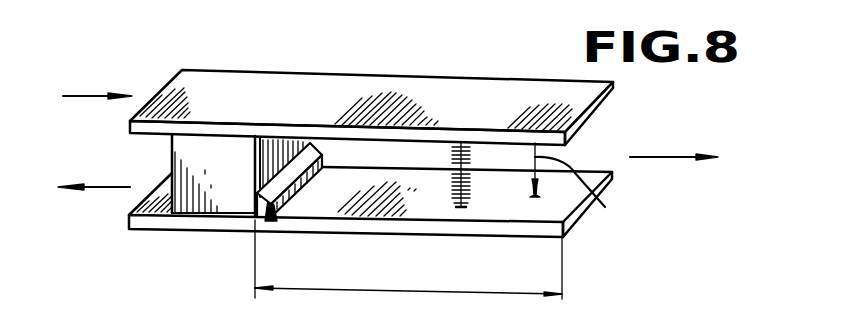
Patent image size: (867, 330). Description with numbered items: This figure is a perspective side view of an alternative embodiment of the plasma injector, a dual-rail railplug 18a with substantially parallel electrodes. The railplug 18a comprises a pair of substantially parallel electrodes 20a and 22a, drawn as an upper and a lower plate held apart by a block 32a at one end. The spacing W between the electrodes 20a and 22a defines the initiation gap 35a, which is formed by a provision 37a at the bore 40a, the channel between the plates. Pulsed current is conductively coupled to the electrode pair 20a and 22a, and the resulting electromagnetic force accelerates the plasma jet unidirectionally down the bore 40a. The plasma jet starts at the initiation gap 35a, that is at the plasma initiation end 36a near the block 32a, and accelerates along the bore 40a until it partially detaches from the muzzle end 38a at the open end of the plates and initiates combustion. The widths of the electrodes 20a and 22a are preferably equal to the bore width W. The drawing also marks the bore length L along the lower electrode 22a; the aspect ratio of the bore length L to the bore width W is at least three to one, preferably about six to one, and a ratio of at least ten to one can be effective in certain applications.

The dual-rail railplug 18a is at (410, 72).
The electrode 20a is at (614, 86).
The electrode 22a is at (390, 222).
The insulator block 32a is at (193, 147).
The initiation gap 35a is at (253, 184).
The initiation end 36a is at (300, 140).
The provision 37a is at (264, 137).
The muzzle end 38a is at (560, 197).
The bore 40a is at (585, 145).
The bore width W is at (606, 191).
The bore length L is at (387, 292).